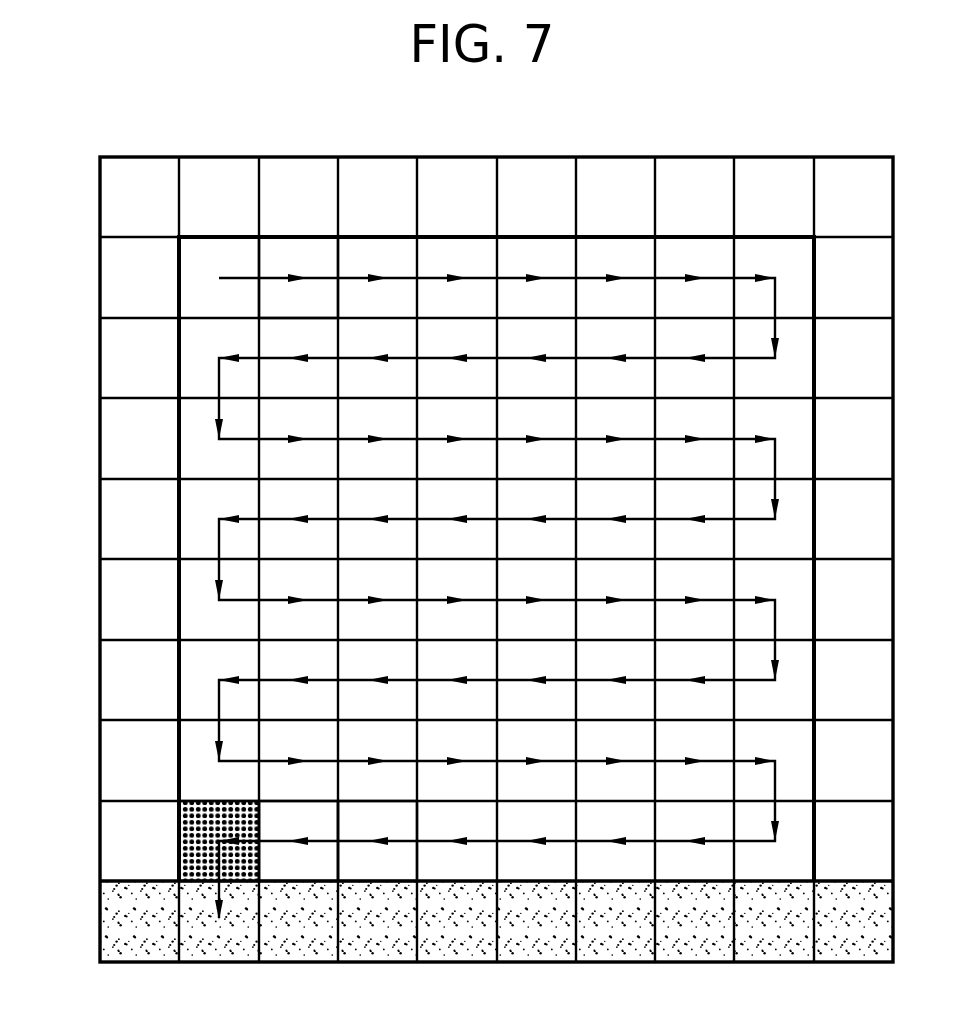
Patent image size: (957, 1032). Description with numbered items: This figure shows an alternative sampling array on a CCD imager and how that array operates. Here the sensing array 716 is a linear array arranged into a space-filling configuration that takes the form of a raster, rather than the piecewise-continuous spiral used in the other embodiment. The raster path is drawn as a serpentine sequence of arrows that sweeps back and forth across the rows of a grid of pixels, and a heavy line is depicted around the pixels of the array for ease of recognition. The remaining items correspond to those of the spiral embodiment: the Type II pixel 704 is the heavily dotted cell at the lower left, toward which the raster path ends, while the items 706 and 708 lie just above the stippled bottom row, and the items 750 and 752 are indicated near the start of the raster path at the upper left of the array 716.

The sensing array 716 is at (521, 226).
The sampling array element 750 is at (304, 250).
The sampling array element 752 is at (222, 250).
The Type II pixel 704 is at (207, 850).
The imager element 706 is at (377, 863).
The imager element 708 is at (299, 863).